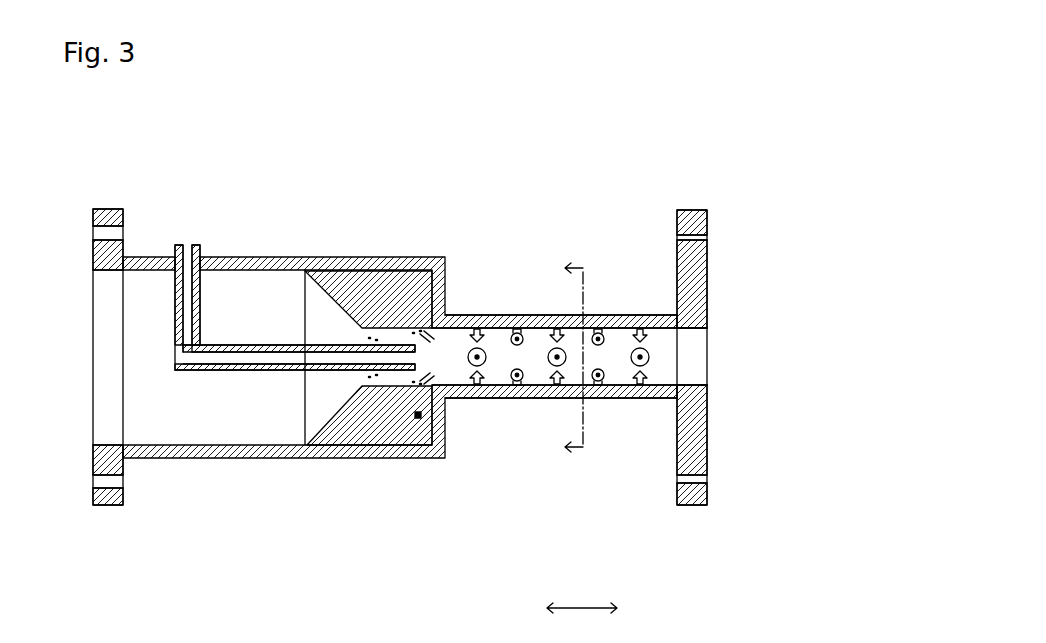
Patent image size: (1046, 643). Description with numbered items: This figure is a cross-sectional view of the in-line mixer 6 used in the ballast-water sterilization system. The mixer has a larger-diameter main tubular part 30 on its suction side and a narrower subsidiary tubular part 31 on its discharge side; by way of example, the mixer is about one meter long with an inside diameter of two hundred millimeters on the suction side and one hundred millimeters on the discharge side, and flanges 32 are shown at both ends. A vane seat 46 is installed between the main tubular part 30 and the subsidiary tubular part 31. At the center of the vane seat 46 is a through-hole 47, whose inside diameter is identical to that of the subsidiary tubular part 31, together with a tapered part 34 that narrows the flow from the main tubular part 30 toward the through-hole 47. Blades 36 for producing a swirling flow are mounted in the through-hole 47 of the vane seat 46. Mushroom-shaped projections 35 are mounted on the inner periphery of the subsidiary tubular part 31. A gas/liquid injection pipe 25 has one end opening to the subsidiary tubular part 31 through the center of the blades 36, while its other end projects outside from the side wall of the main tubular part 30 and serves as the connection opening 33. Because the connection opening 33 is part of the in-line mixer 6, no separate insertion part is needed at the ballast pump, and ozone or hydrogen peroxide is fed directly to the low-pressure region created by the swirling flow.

The in-line mixer 6 is at (795, 148).
The gas/liquid injection pipe 25 is at (268, 370).
The main tubular part 30 is at (232, 257).
The subsidiary tubular part 31 is at (528, 315).
The flange 32 is at (110, 505).
The connection opening 33 is at (190, 245).
The tapered part 34 is at (313, 300).
The mushroom-shaped projections 35 is at (465, 384).
The blades 36 is at (383, 343).
The vane seat 46 is at (418, 415).
The through-hole 47 is at (403, 378).